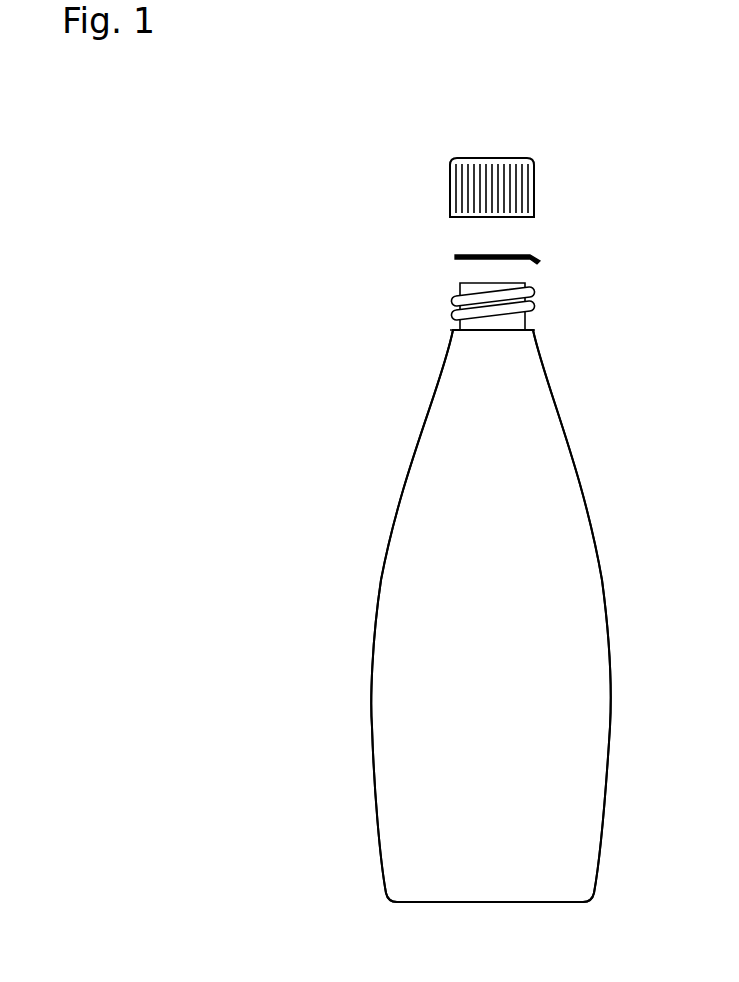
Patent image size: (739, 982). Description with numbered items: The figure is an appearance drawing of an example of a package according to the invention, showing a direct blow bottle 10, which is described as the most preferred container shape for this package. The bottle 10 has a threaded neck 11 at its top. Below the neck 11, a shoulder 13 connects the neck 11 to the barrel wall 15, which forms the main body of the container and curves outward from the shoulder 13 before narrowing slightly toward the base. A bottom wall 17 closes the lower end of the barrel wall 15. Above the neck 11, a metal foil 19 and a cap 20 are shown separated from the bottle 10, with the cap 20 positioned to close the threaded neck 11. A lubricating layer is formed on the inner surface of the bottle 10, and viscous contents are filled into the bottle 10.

The direct blow bottle 10 is at (328, 561).
The threaded neck 11 is at (545, 305).
The shoulder 13 is at (582, 455).
The barrel wall 15 is at (595, 642).
The bottom wall 17 is at (550, 903).
The metal foil 19 is at (462, 254).
The cap 20 is at (534, 183).